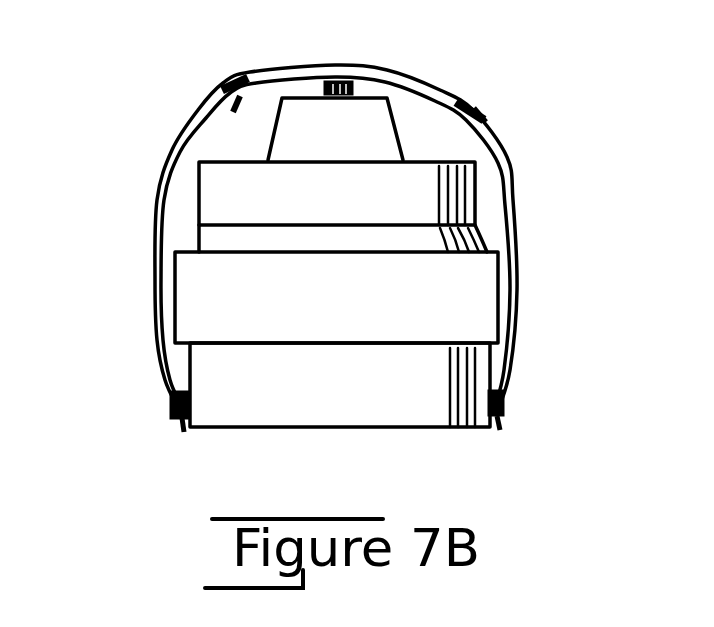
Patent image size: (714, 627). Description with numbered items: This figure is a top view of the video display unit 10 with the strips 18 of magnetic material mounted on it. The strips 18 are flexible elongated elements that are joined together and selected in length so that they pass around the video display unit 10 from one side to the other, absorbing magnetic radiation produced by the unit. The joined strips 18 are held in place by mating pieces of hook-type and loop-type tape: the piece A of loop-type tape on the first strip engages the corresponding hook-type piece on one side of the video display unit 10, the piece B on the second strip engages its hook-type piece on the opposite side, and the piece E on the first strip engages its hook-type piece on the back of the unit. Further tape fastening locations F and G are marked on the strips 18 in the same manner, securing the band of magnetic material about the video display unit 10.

The video display unit 10 is at (200, 362).
The strips of magnetic material 18 is at (368, 66).
The piece of loop-type tape A is at (514, 404).
The piece of loop-type tape B is at (164, 406).
The piece of loop-type tape E is at (338, 64).
The tie point F,F' F is at (480, 96).
The tie point G,G' G is at (244, 82).